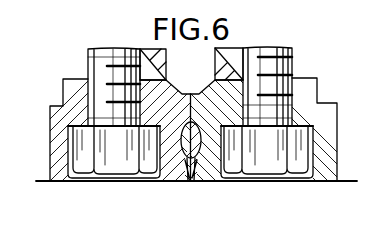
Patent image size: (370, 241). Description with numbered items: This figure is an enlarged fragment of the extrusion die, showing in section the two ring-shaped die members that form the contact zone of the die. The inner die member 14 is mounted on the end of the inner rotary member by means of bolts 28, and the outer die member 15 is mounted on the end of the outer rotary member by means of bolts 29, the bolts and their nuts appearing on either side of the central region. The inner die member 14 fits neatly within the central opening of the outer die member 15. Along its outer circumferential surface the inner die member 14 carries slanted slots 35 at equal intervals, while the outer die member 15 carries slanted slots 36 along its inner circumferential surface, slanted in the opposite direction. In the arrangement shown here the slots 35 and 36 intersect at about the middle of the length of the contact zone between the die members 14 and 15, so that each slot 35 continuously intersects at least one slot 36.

The inner die member 14 is at (57, 168).
The outer die member 15 is at (321, 168).
The bolts 28 is at (114, 160).
The bolts 29 is at (264, 158).
The slanted slots 35 is at (186, 181).
The slanted slots 36 is at (200, 181).